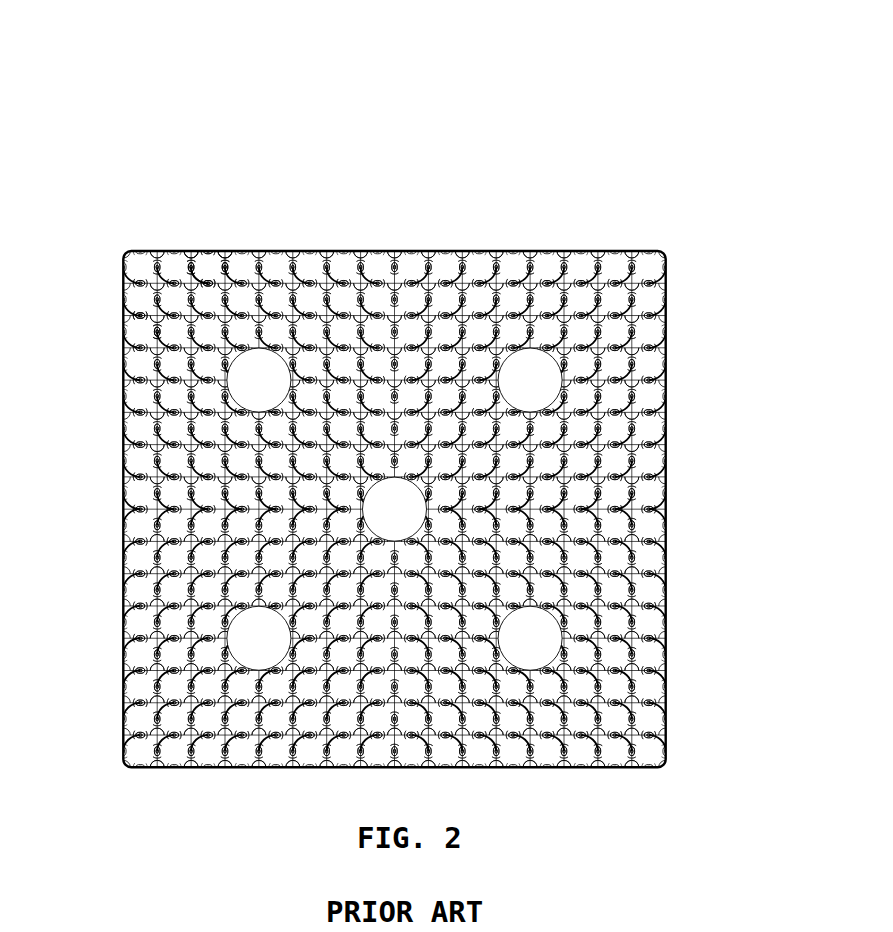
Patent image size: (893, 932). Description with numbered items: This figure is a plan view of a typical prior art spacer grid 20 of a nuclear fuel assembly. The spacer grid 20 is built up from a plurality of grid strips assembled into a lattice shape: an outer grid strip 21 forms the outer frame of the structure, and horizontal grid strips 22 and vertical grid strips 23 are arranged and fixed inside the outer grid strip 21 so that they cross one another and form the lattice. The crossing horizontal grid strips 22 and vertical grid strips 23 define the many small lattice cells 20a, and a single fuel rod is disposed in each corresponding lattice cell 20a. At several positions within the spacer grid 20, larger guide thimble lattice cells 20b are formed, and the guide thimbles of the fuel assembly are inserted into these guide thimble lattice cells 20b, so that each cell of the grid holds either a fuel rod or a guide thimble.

The spacer grid 20 is at (411, 415).
The lattice cell 20a is at (216, 267).
The guide thimble lattice cell 20b is at (531, 387).
The outer grid strip 21 is at (507, 250).
The horizontal grid strip 22 is at (138, 316).
The vertical grid strip 23 is at (158, 338).